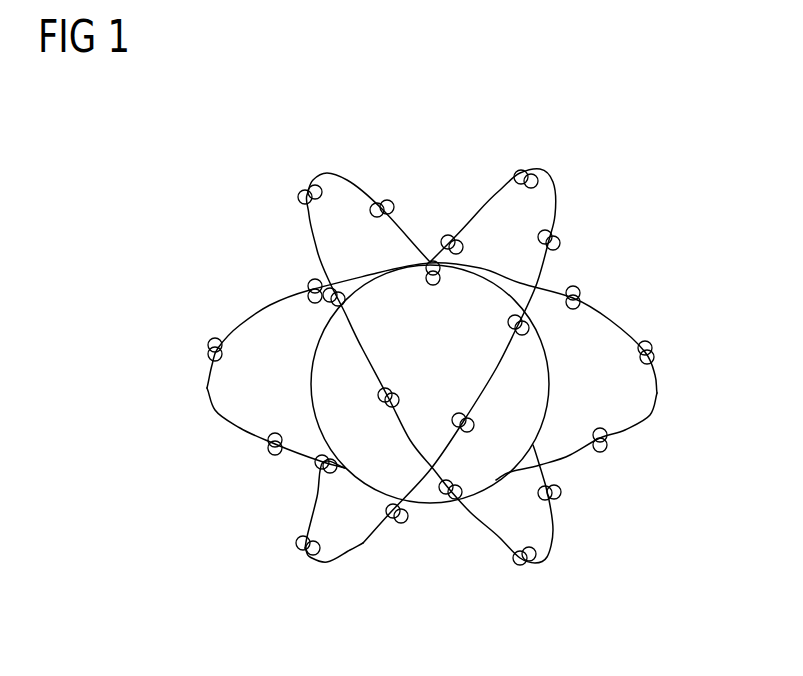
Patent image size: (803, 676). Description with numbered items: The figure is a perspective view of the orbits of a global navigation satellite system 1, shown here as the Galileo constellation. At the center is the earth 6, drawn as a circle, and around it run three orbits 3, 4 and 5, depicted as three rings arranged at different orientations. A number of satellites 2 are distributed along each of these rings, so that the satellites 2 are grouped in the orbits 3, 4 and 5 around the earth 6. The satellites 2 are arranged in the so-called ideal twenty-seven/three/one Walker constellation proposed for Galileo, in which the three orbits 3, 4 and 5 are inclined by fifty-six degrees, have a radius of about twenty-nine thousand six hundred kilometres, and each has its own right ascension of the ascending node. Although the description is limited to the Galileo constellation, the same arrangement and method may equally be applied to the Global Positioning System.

The global navigation satellite system 1 is at (692, 165).
The satellites 2 is at (557, 239).
The orbit 3 is at (312, 172).
The orbit 4 is at (660, 393).
The orbit 5 is at (363, 549).
The earth 6 is at (328, 369).